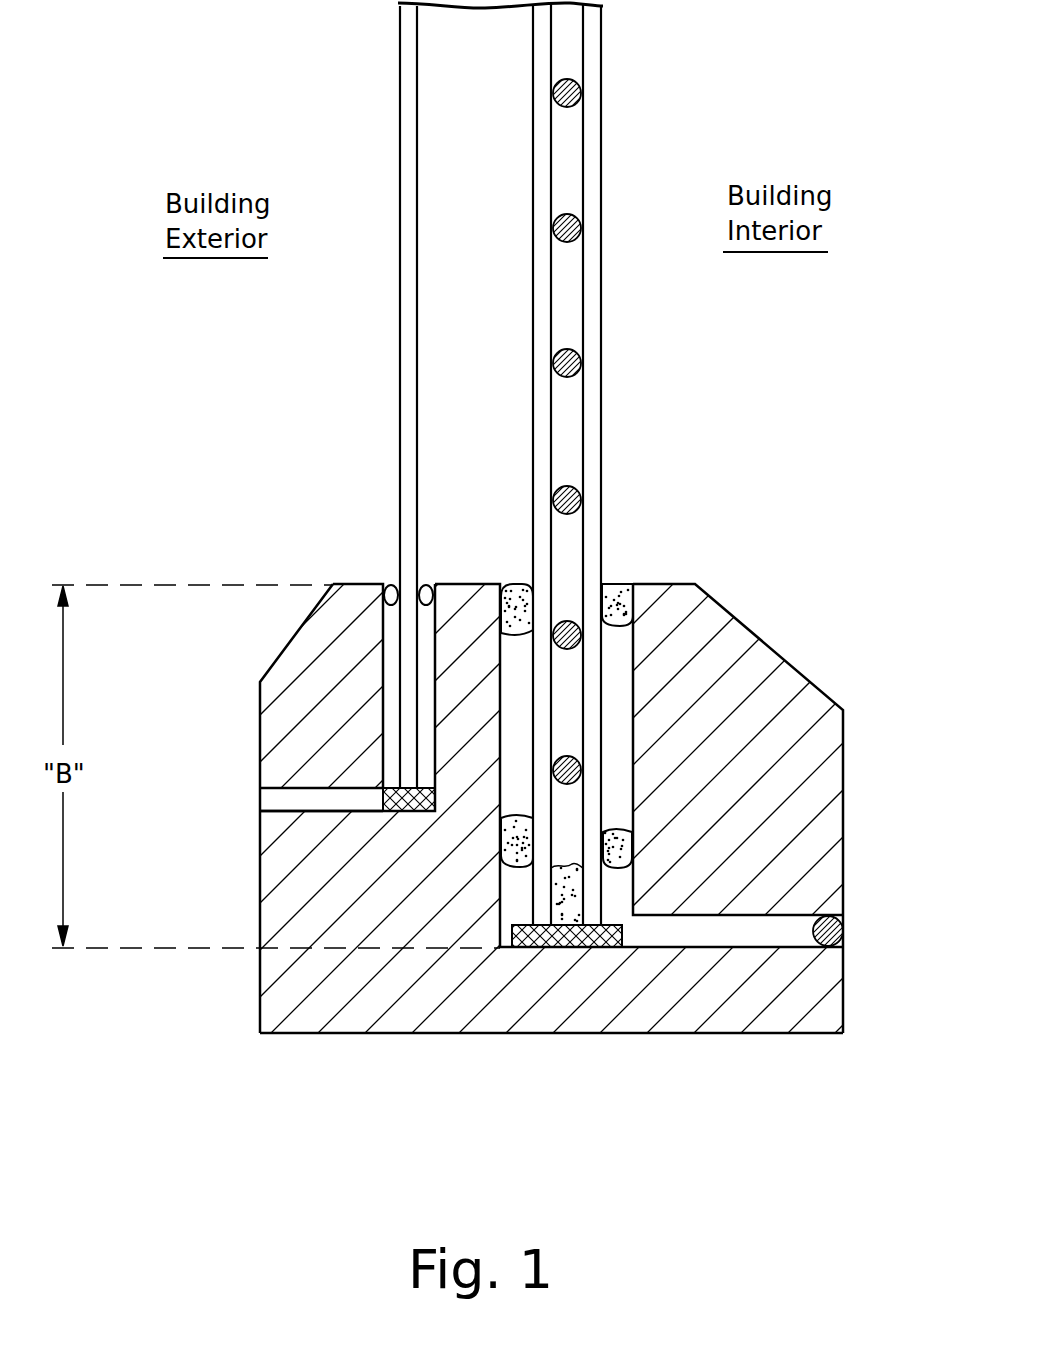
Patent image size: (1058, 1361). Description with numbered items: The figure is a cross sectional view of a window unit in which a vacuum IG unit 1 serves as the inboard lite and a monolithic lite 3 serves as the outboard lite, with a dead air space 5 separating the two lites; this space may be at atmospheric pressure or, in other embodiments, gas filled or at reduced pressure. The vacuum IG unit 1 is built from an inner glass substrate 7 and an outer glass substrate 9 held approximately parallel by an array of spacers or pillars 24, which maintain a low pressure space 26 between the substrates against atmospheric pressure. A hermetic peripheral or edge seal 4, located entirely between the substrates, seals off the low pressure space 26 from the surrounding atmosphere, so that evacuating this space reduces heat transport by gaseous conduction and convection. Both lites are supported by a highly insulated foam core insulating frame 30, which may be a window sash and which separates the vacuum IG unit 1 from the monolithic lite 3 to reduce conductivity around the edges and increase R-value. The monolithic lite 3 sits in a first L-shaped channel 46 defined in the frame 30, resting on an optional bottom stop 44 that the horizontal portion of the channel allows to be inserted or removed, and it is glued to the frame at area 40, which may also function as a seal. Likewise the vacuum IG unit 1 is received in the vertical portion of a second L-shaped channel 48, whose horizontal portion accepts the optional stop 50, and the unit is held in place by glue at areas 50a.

The vacuum IG unit 1 is at (606, 464).
The monolithic lite 3 is at (382, 115).
The dead air space 5 is at (478, 178).
The inner glass substrate 7 is at (592, 384).
The outer glass substrate 9 is at (545, 530).
The spacers or pillars 24 is at (582, 230).
The low pressure space 26 is at (568, 430).
The foam core insulating frame 30 is at (762, 616).
The adhesive area 40 is at (390, 586).
The bottom stop 44 is at (407, 810).
The first L-shaped channel 46 is at (280, 798).
The second L-shaped channel 48 is at (730, 932).
The stop 50 is at (520, 950).
The glue areas 50a is at (512, 583).
The peripheral or edge seal 4 is at (580, 948).